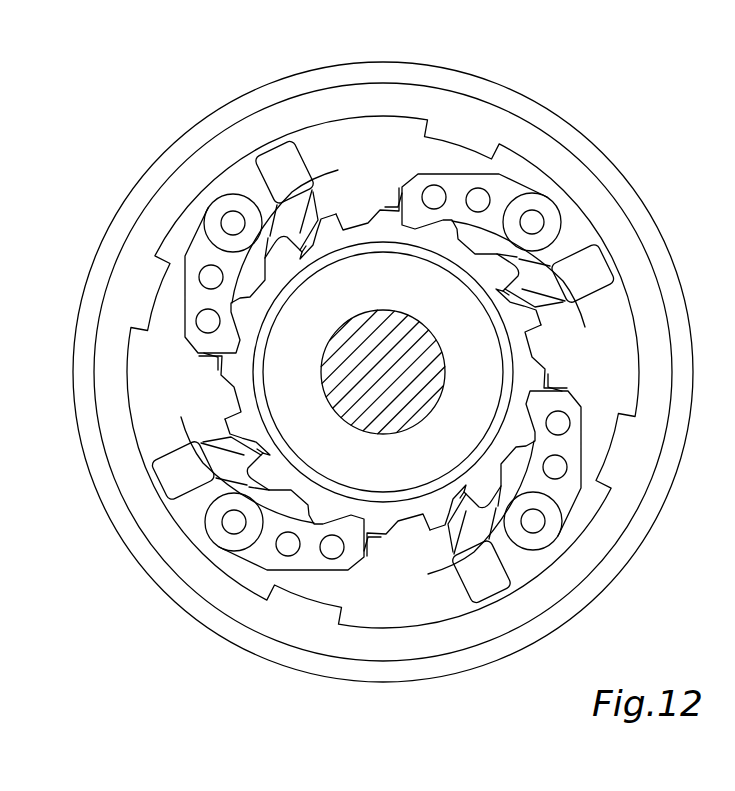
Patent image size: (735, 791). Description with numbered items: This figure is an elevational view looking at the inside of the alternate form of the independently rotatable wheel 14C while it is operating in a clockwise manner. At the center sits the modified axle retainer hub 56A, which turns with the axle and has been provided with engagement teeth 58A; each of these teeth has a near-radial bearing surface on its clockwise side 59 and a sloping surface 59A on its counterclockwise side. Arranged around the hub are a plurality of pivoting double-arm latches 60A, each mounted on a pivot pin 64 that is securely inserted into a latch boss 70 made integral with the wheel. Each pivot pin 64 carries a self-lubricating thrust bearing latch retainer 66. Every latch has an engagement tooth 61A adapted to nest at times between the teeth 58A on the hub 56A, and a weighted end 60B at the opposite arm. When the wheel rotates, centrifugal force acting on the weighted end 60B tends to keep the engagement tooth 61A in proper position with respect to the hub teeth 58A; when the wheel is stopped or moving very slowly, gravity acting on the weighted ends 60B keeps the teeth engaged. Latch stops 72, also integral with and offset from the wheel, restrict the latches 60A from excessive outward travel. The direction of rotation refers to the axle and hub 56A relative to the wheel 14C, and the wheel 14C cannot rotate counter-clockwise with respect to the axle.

The wheel 14C is at (505, 110).
The latch stops 72 is at (462, 137).
The latch boss 70 is at (538, 182).
The pivoting double-arm latches 60A is at (413, 190).
The weighted end 60B is at (282, 167).
The clockwise side 59 is at (284, 238).
The sloping surface 59A is at (365, 395).
The pivot pins 64 is at (531, 224).
The thrust bearing latch retainers 66 is at (556, 208).
The engagement teeth 58A is at (333, 213).
The axle retainer hub 56A is at (313, 192).
The engagement tooth 61A is at (405, 243).